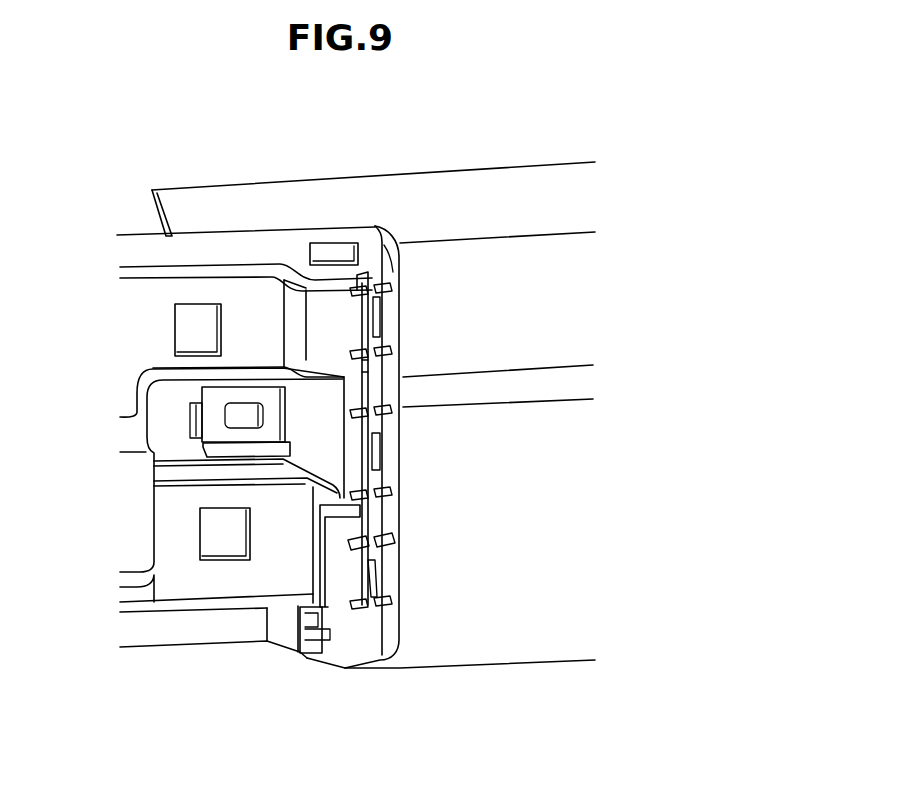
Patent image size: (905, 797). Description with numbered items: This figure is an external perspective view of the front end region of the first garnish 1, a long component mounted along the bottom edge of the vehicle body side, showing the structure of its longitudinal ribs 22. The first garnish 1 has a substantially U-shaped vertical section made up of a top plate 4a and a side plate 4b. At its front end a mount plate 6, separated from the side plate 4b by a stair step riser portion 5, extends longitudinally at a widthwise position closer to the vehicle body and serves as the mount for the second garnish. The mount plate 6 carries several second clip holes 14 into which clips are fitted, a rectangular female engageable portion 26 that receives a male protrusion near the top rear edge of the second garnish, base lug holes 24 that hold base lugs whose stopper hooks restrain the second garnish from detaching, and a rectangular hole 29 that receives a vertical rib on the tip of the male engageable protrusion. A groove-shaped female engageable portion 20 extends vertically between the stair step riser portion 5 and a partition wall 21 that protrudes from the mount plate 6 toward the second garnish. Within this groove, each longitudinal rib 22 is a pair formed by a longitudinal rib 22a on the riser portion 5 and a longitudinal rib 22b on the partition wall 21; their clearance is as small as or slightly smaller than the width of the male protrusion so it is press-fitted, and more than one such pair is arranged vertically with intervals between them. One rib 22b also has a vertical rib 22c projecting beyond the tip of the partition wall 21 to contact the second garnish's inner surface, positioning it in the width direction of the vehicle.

The first garnish 1 is at (288, 166).
The top plate 4a is at (457, 200).
The side plate 4b is at (522, 280).
The stair step riser portion 5 is at (375, 226).
The mount plate 6 is at (150, 297).
The second clip holes 14 is at (197, 304).
The female engageable portion 20 is at (380, 392).
The partition wall 21 is at (372, 530).
The longitudinal rib 22 is at (485, 303).
The longitudinal rib 22a is at (383, 350).
The longitudinal rib 22b is at (373, 348).
The vertical rib 22c is at (372, 366).
The base lug hole 24 is at (377, 313).
The female engageable portion 26 is at (323, 243).
The rectangular hole 29 is at (380, 452).